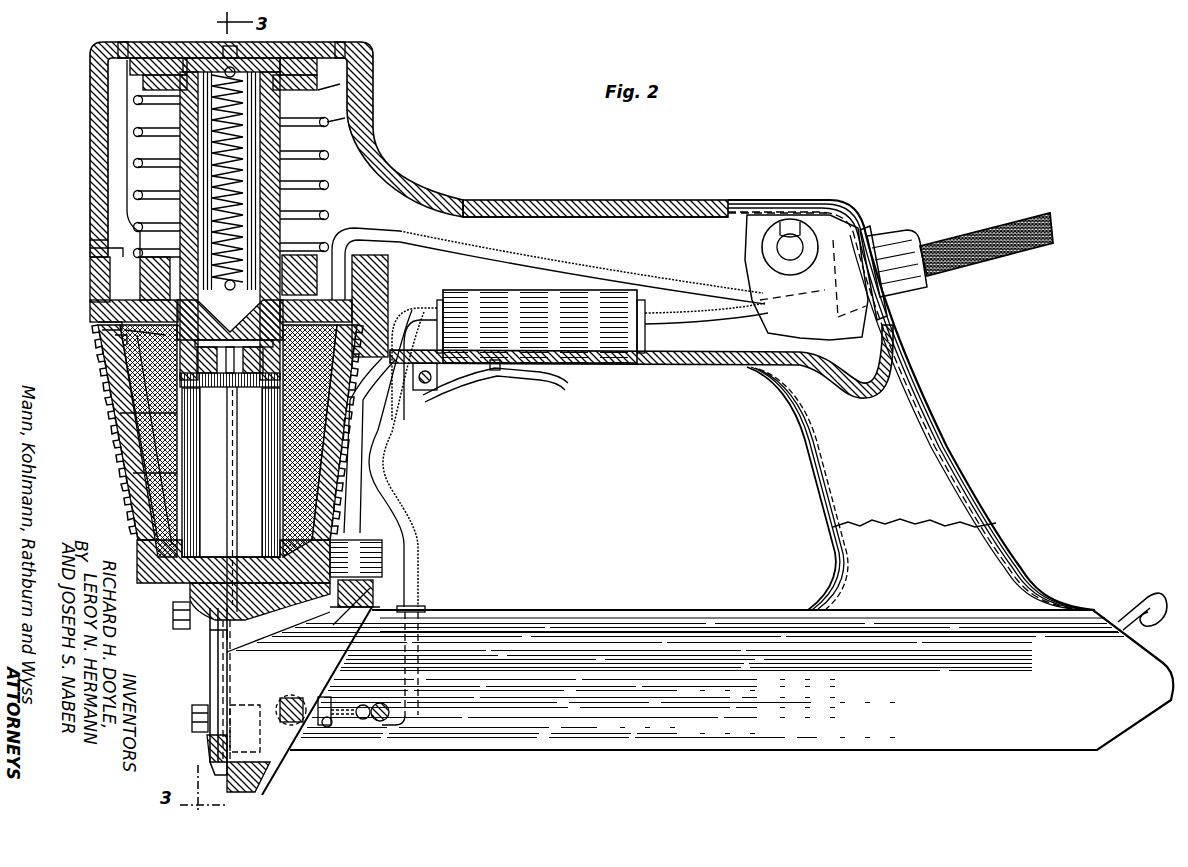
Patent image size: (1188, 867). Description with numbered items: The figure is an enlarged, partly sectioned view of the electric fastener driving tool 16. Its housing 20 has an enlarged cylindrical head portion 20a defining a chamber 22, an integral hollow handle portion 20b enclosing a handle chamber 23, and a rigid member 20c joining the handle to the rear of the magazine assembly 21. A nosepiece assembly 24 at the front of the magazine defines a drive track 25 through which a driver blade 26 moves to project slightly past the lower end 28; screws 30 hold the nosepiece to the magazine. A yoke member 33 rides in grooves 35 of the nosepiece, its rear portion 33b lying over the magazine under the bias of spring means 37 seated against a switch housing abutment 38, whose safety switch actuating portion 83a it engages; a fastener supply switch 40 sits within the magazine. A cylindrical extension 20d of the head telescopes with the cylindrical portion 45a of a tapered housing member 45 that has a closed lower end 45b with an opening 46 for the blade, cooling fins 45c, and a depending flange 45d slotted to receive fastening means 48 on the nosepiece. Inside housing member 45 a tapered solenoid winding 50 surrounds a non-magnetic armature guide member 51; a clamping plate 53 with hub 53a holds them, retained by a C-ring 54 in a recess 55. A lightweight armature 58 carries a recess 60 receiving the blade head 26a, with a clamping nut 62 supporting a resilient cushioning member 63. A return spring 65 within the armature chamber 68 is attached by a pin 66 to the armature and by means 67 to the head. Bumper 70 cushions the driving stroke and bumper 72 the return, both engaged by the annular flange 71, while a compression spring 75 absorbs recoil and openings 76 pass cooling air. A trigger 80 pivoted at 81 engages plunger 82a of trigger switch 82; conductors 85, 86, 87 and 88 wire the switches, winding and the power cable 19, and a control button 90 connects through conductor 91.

The electric fastener driving tool 16 is at (650, 777).
The power and control cable 19 is at (1000, 230).
The housing 20 is at (603, 191).
The cylindrical head portion 20a is at (92, 100).
The handle portion 20b is at (500, 200).
The rigid member 20c is at (912, 428).
The cylindrical extension 20d is at (90, 246).
The magazine assembly 21 is at (638, 610).
The chamber 22 is at (118, 153).
The handle chamber 23 is at (680, 232).
The nosepiece assembly 24 is at (202, 671).
The drive track 25 is at (235, 665).
The driver blade 26 is at (237, 458).
The head of driver blade 26a is at (268, 400).
The lower end of nosepiece 28 is at (213, 778).
The fastening means 30 is at (192, 712).
The yoke member 33 is at (288, 745).
The rear portion of yoke 33b is at (372, 592).
The grooves 35 is at (225, 636).
The spring means 37 is at (382, 552).
The switch housing abutment 38 is at (388, 516).
The fastener supply switch 40 is at (342, 730).
The housing member 45 is at (110, 446).
The cylindrical portion of housing member 45a is at (98, 324).
The closed lower end 45b is at (160, 545).
The cooling fins 45c is at (384, 426).
The depending flange 45d is at (192, 600).
The opening 46 is at (237, 555).
The fastening means 48 is at (173, 626).
The solenoid winding 50 is at (140, 370).
The armature guide member 51 is at (140, 474).
The clamping plate 53 is at (105, 340).
The central hub portion 53a is at (155, 257).
The C-ring 54 is at (92, 302).
The recess 55 is at (90, 268).
The armature 58 is at (318, 90).
The recess 60 is at (128, 392).
The clamping nut 62 is at (150, 412).
The resilient cushioning member 63 is at (208, 388).
The return spring 65 is at (220, 72).
The pin 66 is at (320, 256).
The spring anchoring means 67 is at (238, 68).
The chamber 68 is at (283, 140).
The resilient bumper 70 is at (342, 232).
The annular flange 71 is at (143, 82).
The resilient bumper 72 is at (172, 58).
The compression spring 75 is at (327, 122).
The openings 76 is at (122, 42).
The firing trigger 80 is at (530, 380).
The pivot 81 is at (432, 392).
The trigger switch 82 is at (576, 346).
The actuating plunger 82a is at (494, 376).
The actuating portion of safety switch 83a is at (348, 618).
The insulated twin conductor 85 is at (364, 470).
The insulated twin conductor 86 is at (412, 308).
The insulated twin conductor 87 is at (682, 324).
The insulated twin conductor 88 is at (650, 278).
The control and indicating button 90 is at (805, 225).
The insulated twin conductor 91 is at (855, 212).